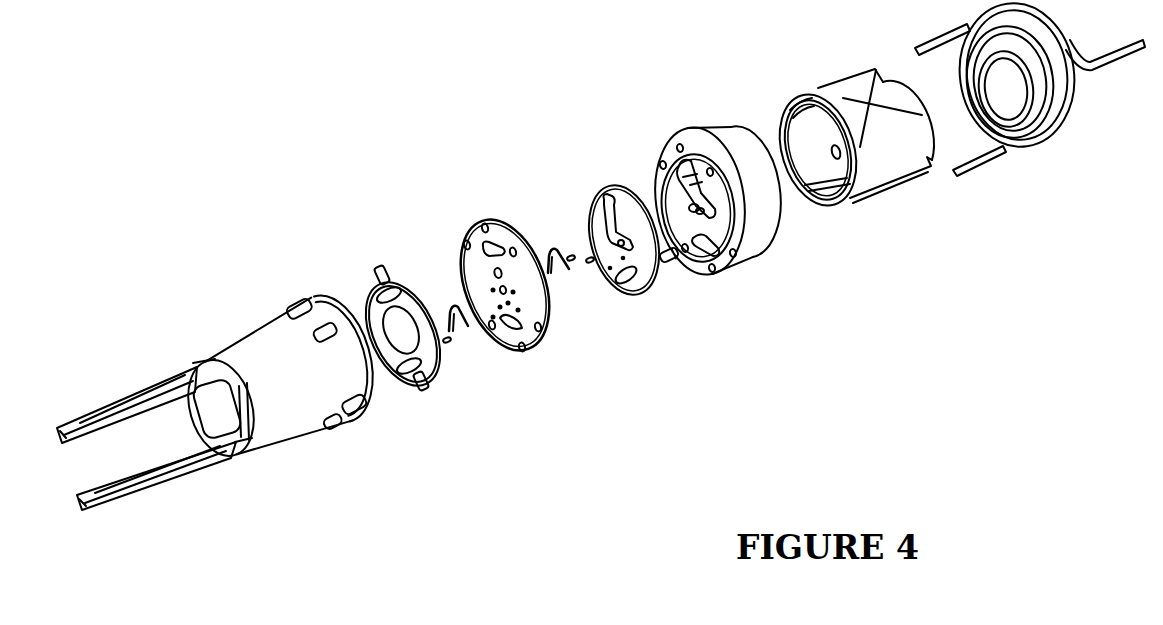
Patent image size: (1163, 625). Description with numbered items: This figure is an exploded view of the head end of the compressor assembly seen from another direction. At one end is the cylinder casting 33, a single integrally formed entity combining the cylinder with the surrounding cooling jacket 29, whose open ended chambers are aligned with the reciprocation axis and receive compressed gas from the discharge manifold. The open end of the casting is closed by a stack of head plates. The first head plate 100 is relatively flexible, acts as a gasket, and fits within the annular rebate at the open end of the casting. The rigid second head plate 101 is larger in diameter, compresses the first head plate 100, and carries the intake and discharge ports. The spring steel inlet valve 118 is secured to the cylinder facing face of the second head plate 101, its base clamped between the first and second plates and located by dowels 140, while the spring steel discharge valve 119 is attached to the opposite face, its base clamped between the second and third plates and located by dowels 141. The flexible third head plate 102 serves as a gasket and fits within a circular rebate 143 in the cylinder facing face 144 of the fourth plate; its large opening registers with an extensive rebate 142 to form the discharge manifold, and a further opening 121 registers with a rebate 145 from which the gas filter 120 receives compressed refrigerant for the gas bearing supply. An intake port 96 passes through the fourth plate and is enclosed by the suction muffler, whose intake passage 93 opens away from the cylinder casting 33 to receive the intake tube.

The cylinder casting 33 is at (248, 354).
The cooling jacket 29 is at (273, 417).
The first head plate 100 is at (432, 372).
The inlet valve 118 is at (450, 312).
The dowels 140 is at (450, 344).
The second head plate 101 is at (523, 353).
The discharge valve 119 is at (546, 255).
The dowels 141 is at (589, 258).
The third head plate 102 is at (637, 295).
The further opening 121 is at (628, 292).
The gas filter 120 is at (668, 262).
The circular rebate 143 is at (712, 280).
The cylinder facing face 144 is at (747, 245).
The rebate 145 is at (738, 270).
The discharge manifold rebate 142 is at (673, 163).
The intake port 96 is at (690, 213).
The intake passage 93 is at (873, 185).